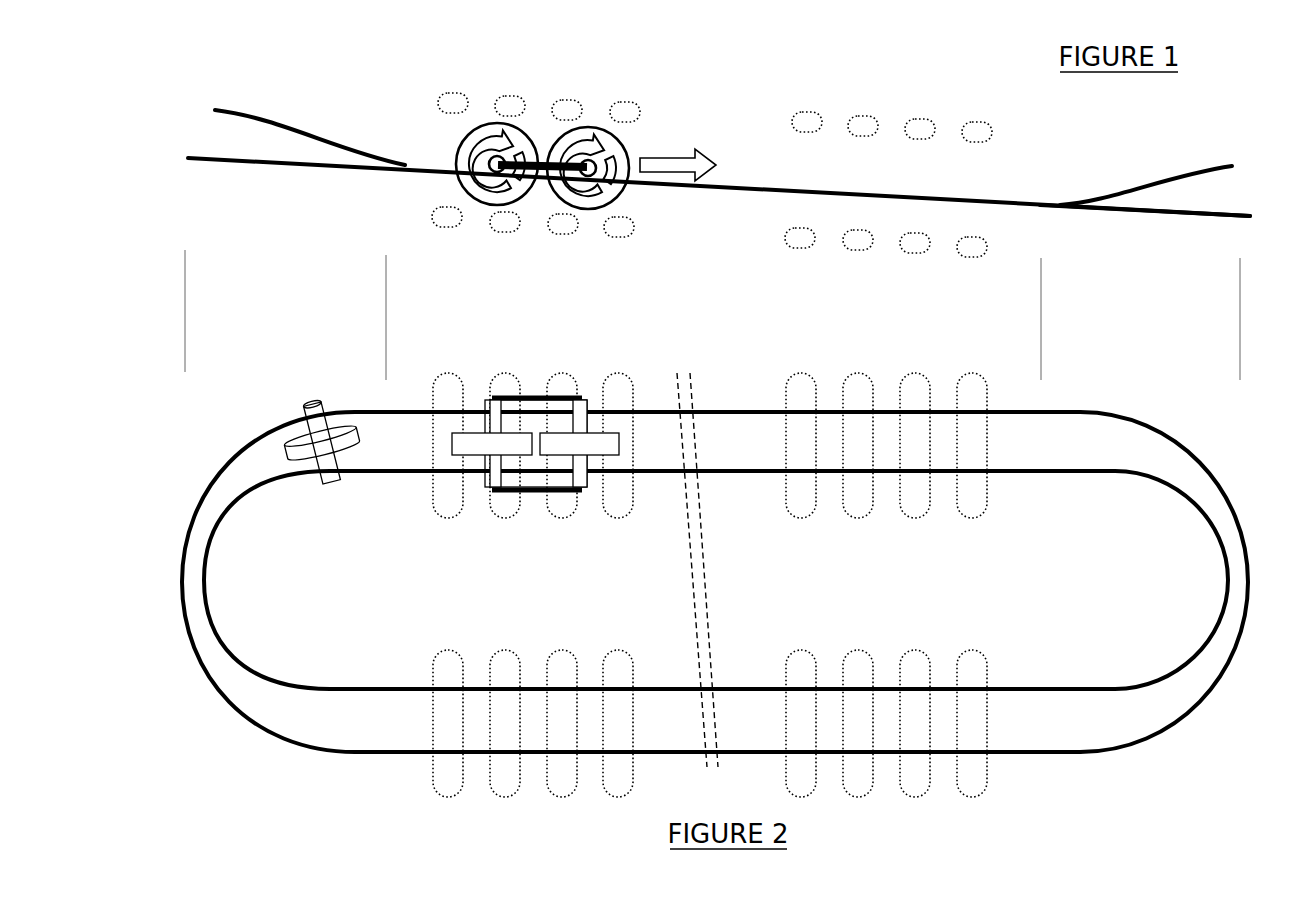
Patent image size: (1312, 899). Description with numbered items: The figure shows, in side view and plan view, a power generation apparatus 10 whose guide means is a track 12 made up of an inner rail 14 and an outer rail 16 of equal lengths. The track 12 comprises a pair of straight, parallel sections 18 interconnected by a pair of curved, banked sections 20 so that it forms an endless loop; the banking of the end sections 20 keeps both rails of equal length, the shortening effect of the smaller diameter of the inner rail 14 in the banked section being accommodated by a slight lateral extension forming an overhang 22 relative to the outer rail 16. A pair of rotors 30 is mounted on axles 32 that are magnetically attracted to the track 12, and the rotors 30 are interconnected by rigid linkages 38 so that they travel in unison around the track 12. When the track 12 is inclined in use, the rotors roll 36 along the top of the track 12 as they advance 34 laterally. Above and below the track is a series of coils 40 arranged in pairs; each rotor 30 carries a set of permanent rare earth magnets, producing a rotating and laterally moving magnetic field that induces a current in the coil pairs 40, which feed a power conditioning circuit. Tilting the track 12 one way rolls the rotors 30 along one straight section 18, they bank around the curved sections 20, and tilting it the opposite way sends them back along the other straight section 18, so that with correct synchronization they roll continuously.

In FIG. 1, the power generation apparatus 10 is at (306, 78).
In FIG. 2, the power generation apparatus 10 is at (192, 688).
In FIG. 1, the track 12 is at (323, 143).
In FIG. 2, the track 12 is at (200, 518).
In FIG. 1, the inner rail 14 is at (1200, 167).
In FIG. 2, the inner rail 14 is at (1013, 688).
In FIG. 1, the outer rail 16 is at (1228, 217).
In FIG. 2, the outer rail 16 is at (1097, 752).
In FIG. 1, the straight, parallel sections 18 is at (1040, 318).
In FIG. 1, the curved, banked sections 20 is at (385, 318).
In FIG. 2, the overhang 22 is at (1180, 582).
In FIG. 1, the rotors 30 is at (507, 133).
In FIG. 2, the rotors 30 is at (470, 443).
In FIG. 1, the axles 32 is at (490, 162).
In FIG. 2, the axles 32 is at (487, 482).
In FIG. 1, the lateral advance 34 is at (678, 165).
In FIG. 1, the rolling motion 36 is at (614, 166).
In FIG. 1, the rigid linkages 38 is at (541, 185).
In FIG. 2, the rigid linkages 38 is at (533, 390).
In FIG. 1, the coils 40 is at (866, 121).
In FIG. 2, the coils 40 is at (800, 498).